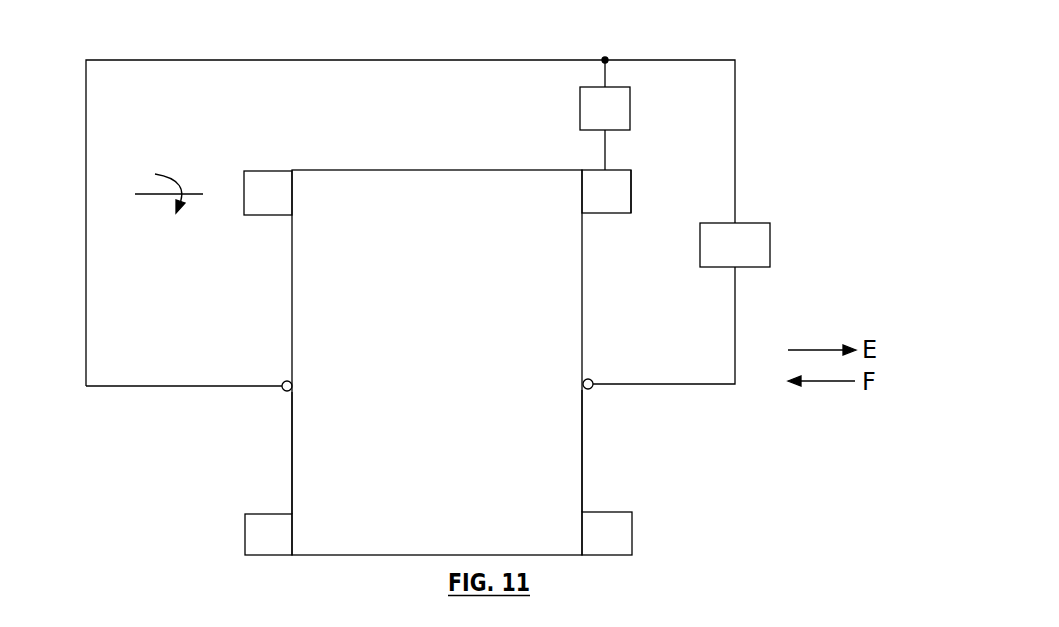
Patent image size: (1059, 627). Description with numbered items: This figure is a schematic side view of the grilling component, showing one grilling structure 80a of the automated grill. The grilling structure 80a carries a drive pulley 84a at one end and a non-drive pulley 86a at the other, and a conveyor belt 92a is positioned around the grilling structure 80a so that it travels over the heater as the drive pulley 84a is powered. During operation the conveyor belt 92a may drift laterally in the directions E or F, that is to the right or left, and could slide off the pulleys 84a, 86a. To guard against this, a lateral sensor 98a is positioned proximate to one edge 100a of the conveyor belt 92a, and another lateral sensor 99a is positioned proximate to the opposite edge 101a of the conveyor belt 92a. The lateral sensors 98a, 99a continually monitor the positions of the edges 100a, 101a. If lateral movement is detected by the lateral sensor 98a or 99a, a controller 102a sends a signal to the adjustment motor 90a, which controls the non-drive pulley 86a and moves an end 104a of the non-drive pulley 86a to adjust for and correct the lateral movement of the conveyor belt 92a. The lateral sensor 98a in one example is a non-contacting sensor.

The grilling structure 80a is at (171, 124).
The drive pulley 84a is at (245, 537).
The non-drive pulley 86a is at (244, 186).
The adjustment motor 90a is at (623, 122).
The conveyor belt 92a is at (312, 320).
The lateral sensor 98a is at (592, 388).
The lateral sensor 99a is at (283, 392).
The edge of the conveyor belt 100a is at (585, 455).
The edge of the conveyor belt 101a is at (293, 457).
The controller 102a is at (762, 256).
The end of the non-drive pulley 104a is at (632, 190).